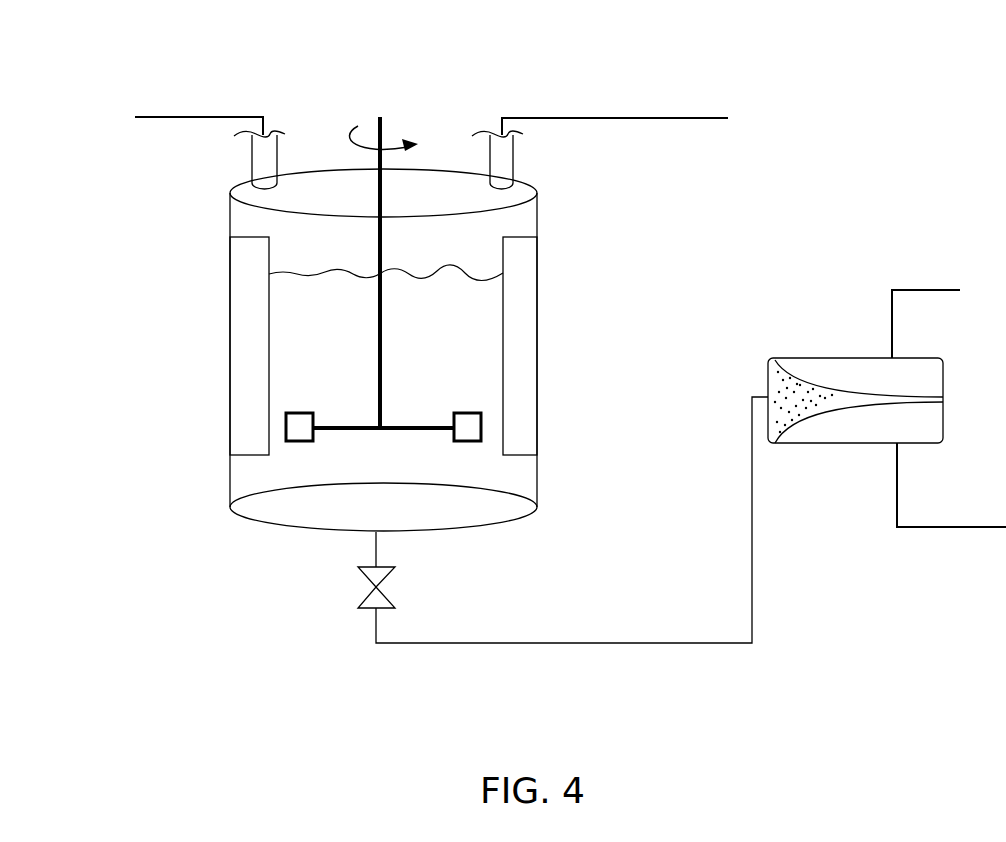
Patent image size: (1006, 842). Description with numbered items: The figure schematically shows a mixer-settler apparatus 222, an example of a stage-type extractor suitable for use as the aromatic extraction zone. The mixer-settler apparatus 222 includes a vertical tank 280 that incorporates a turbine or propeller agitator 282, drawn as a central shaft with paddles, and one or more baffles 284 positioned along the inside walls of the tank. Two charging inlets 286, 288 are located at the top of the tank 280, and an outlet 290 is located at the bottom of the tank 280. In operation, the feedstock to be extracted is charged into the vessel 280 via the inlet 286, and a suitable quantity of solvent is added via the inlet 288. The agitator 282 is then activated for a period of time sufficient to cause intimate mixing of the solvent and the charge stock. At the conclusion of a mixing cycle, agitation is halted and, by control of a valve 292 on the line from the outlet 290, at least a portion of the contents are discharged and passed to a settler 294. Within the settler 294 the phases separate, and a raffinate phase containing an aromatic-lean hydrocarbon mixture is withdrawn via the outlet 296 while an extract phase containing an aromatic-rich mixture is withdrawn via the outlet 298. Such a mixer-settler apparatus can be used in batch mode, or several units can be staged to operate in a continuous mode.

The mixer-settler apparatus 222 is at (178, 45).
The vertical tank 280 is at (396, 517).
The agitator 282 is at (413, 427).
The baffles 284 is at (230, 366).
The charging inlet 286 is at (600, 140).
The charging inlet 288 is at (210, 139).
The outlet 290 is at (376, 551).
The valve 292 is at (367, 576).
The settler 294 is at (886, 442).
The outlet 296 is at (951, 502).
The outlet 298 is at (926, 306).